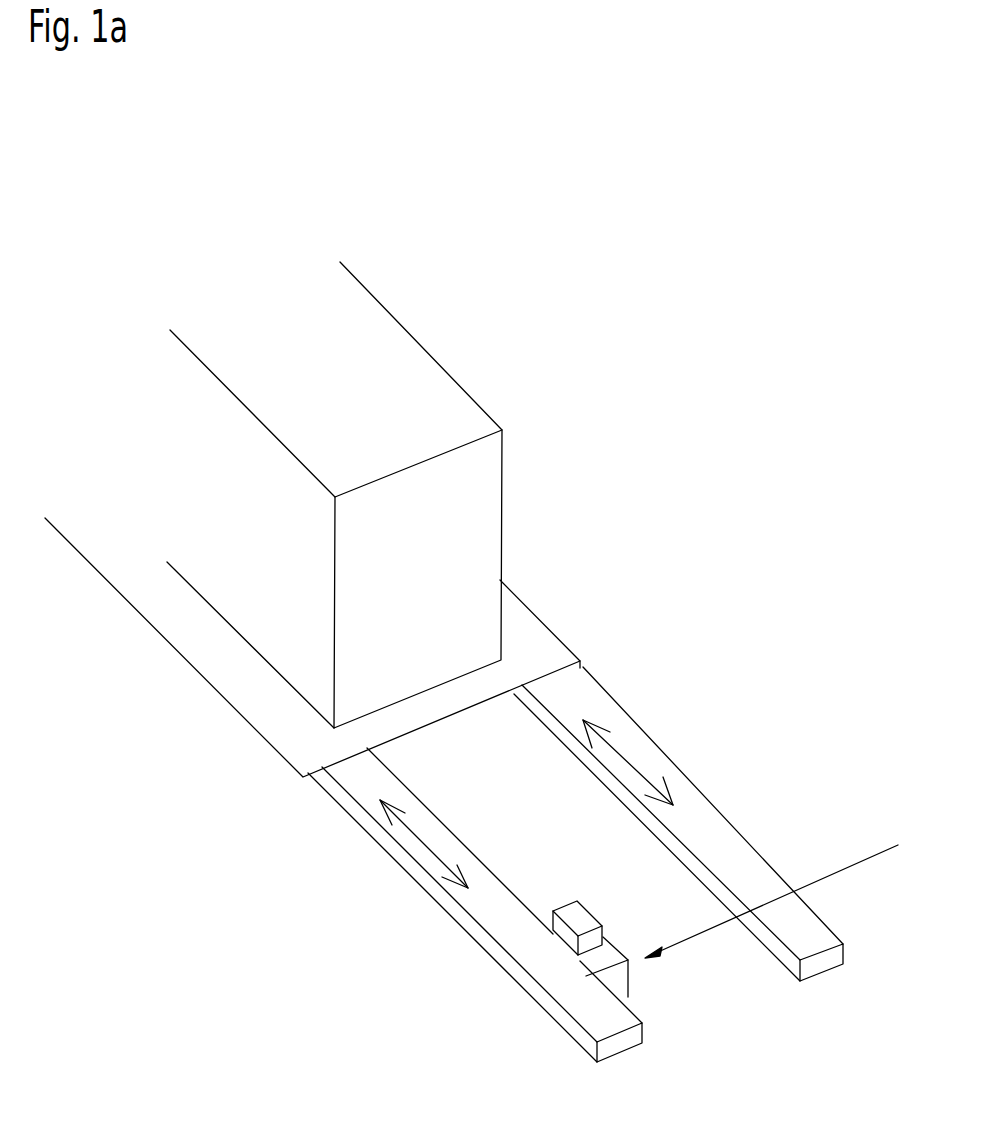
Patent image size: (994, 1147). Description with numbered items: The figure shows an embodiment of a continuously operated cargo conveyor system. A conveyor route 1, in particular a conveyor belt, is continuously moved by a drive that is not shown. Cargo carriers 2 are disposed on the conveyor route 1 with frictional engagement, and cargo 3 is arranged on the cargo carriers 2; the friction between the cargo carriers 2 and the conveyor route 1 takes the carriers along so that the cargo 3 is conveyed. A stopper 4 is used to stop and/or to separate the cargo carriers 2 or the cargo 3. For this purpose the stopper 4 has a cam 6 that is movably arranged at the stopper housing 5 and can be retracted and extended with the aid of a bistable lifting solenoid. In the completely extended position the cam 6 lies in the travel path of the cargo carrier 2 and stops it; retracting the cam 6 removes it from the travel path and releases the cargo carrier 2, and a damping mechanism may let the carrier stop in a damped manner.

The conveyor route 1 is at (688, 812).
The cargo carrier 2 is at (527, 648).
The cargo 3 is at (480, 498).
The stopper 4 is at (782, 892).
The stopper housing 5 is at (607, 985).
The cam 6 is at (600, 907).